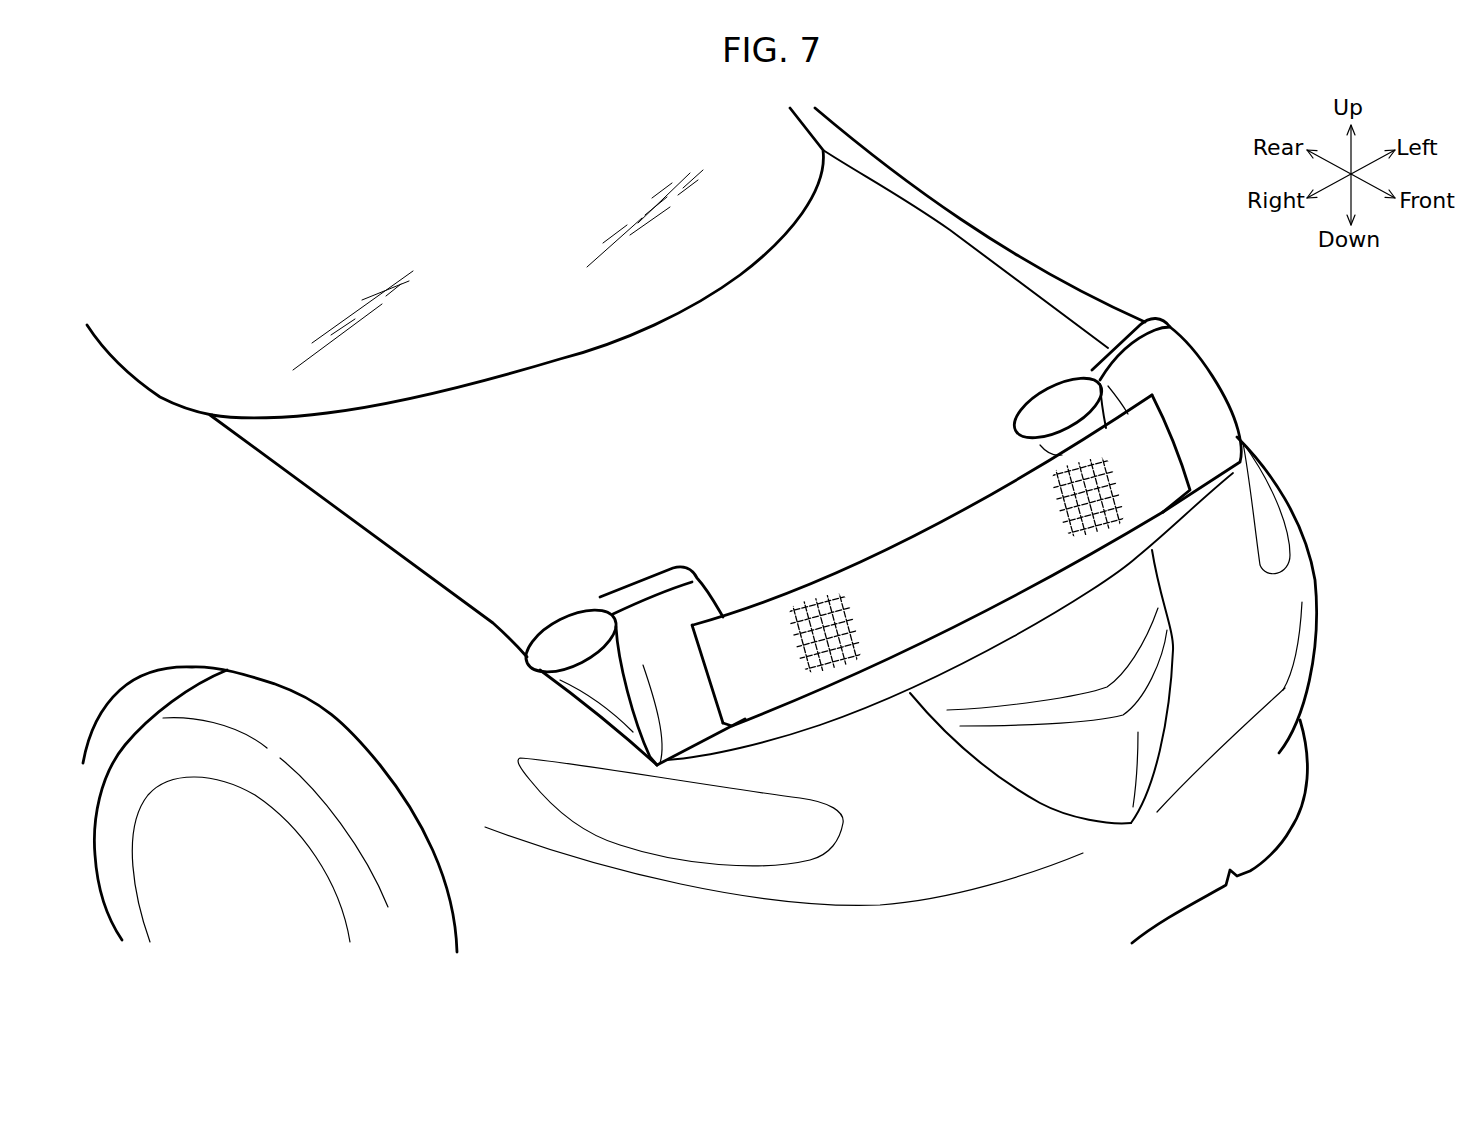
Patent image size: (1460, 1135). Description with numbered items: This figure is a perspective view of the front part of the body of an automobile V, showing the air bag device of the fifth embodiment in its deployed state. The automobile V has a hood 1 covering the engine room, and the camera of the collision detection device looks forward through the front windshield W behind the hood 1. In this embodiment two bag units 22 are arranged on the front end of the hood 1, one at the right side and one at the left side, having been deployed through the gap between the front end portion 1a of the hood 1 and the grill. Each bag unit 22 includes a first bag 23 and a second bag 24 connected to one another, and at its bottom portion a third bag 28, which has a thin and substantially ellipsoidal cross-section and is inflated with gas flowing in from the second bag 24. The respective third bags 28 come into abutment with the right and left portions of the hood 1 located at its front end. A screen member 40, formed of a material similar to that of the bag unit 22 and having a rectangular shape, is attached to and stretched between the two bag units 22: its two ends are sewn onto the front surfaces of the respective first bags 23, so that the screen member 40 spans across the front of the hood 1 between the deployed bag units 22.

The automobile V is at (1105, 193).
The front windshield W is at (773, 165).
The hood 1 is at (937, 287).
The front end portion of the hood 1a is at (1038, 606).
The bag unit 22 is at (695, 552).
The first bag 23 is at (720, 600).
The second bag 24 is at (615, 593).
The third bag 28 is at (577, 705).
The screen member 40 is at (882, 550).